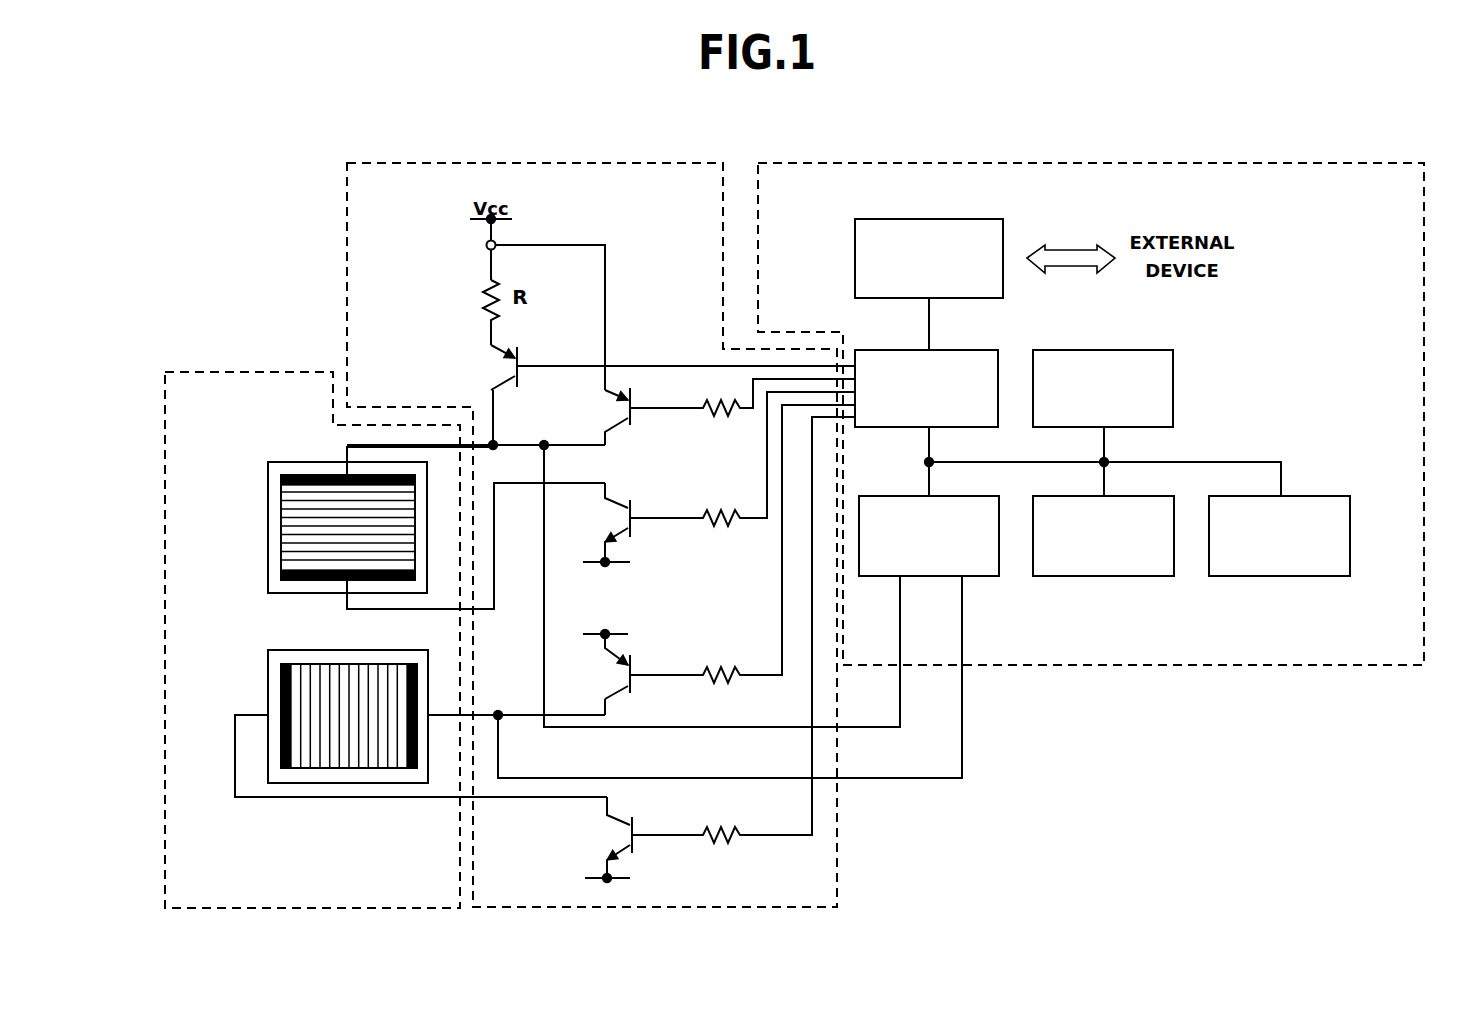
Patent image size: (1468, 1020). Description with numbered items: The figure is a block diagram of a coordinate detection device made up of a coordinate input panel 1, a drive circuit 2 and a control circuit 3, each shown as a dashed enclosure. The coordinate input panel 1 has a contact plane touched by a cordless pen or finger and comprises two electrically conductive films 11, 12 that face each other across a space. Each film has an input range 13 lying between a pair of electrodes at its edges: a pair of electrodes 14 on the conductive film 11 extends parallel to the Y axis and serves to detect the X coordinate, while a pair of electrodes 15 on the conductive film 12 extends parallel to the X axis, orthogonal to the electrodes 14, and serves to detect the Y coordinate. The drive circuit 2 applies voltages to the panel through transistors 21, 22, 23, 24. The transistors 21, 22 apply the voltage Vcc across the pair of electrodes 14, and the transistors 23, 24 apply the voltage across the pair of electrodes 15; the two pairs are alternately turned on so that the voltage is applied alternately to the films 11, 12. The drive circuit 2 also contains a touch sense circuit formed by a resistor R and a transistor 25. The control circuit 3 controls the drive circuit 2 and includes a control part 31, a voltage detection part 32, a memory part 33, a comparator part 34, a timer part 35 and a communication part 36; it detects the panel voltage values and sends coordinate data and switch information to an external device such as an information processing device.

The coordinate input panel 1 is at (251, 370).
The drive circuit 2 is at (346, 258).
The control circuit 3 is at (1424, 278).
The conductive film 11 is at (268, 672).
The conductive film 12 is at (268, 520).
The input range 13 is at (331, 783).
The pair of electrodes 14 is at (275, 783).
The pair of electrodes 15 is at (282, 475).
The transistor 21 is at (630, 647).
The transistor 22 is at (625, 852).
The transistor 23 is at (612, 386).
The transistor 24 is at (622, 496).
The transistor 25 is at (500, 368).
The control part 31 is at (875, 350).
The voltage detection part 32 is at (978, 576).
The memory part 33 is at (1125, 576).
The comparator part 34 is at (1173, 380).
The timer part 35 is at (1303, 576).
The communication part 36 is at (855, 270).